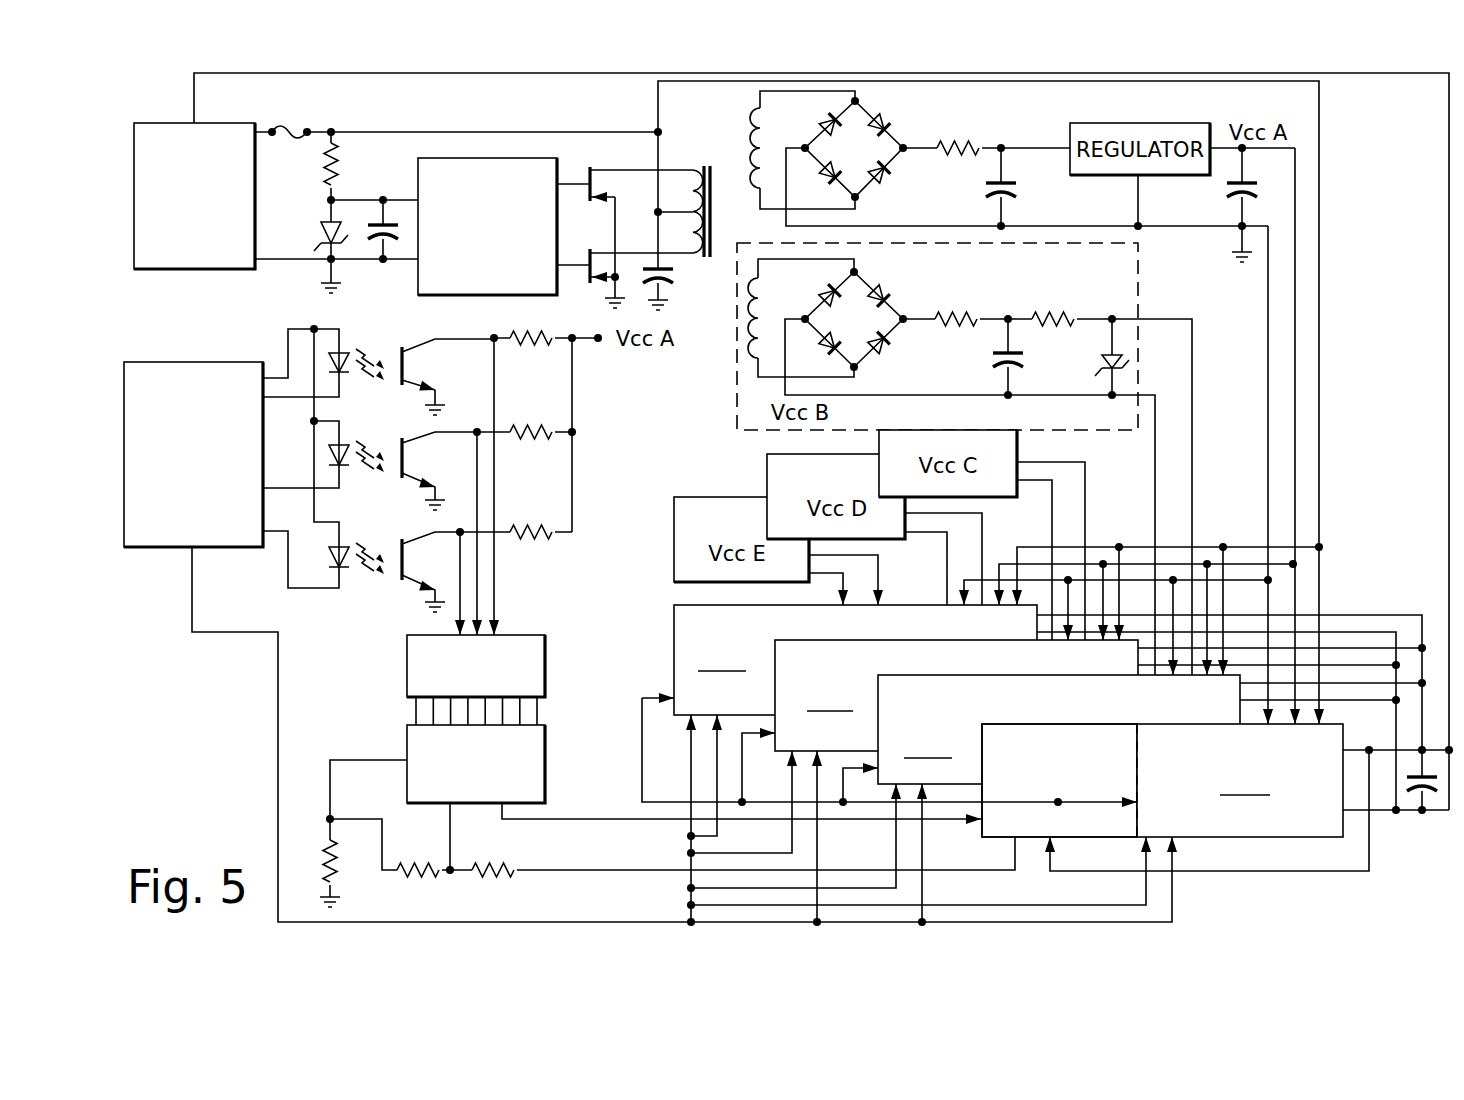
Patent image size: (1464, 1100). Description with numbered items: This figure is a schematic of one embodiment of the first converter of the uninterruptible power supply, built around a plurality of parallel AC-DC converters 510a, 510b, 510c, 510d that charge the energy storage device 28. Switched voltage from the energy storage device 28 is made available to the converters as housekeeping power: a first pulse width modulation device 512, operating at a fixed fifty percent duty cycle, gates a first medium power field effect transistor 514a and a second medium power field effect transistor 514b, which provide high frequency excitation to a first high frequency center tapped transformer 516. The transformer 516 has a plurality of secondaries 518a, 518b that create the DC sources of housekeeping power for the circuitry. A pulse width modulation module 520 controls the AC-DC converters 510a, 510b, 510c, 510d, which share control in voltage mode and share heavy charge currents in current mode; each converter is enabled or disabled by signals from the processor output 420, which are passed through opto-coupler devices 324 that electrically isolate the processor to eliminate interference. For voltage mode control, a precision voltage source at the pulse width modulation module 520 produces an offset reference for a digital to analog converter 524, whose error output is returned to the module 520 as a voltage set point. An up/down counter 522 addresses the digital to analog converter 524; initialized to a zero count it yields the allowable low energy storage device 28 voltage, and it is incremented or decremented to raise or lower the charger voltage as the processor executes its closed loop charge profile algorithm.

The energy storage device 28 is at (193, 270).
The first pulse width modulation device 512 is at (448, 157).
The first medium power field effect transistor 514a is at (600, 176).
The second medium power field effect transistor 514b is at (602, 268).
The first high frequency center tapped transformer 516 is at (706, 258).
The secondary 518a is at (757, 140).
The secondary 518b is at (748, 355).
The opto-coupler devices 324 is at (372, 345).
The processor output 420 is at (212, 548).
The up/down counter 522 is at (407, 670).
The digital to analog converter 524 is at (407, 748).
The AC-DC converter 510a is at (1240, 780).
The AC-DC converter 510b is at (1059, 729).
The AC-DC converter 510c is at (956, 695).
The AC-DC converter 510d is at (855, 660).
The pulse width modulation module 520 is at (1137, 786).